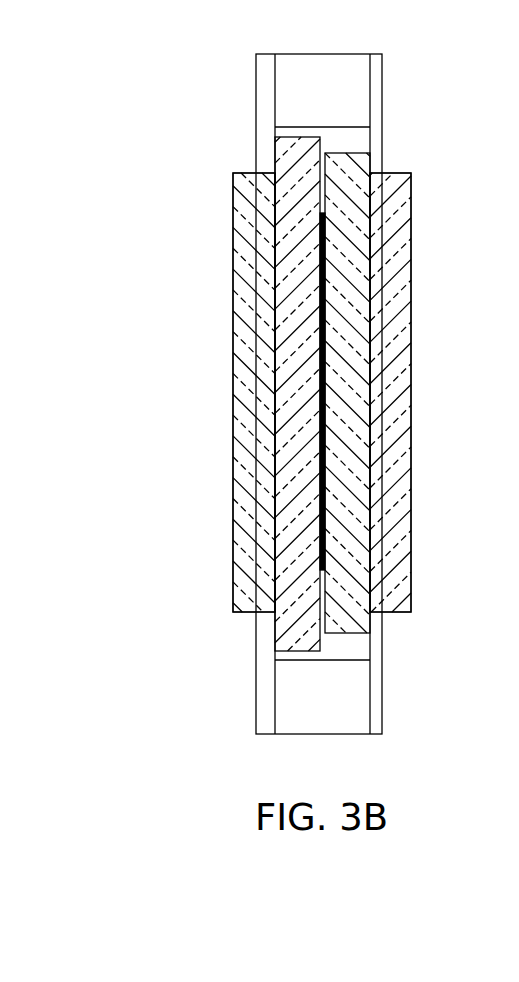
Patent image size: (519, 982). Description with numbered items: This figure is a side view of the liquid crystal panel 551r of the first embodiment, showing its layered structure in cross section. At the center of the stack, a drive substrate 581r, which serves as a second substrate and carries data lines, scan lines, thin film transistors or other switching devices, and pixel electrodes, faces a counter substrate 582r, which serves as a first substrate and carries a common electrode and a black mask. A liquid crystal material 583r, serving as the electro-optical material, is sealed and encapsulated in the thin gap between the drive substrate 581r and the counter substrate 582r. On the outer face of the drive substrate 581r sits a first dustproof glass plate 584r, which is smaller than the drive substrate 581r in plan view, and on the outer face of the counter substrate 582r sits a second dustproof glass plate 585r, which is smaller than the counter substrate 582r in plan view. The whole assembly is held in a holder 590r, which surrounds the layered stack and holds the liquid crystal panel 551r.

The holder 590r is at (360, 90).
The liquid crystal panel 551r is at (235, 298).
The first dustproof glass plate 584r is at (235, 379).
The second dustproof glass plate 585r is at (406, 380).
The drive substrate 581r is at (285, 465).
The counter substrate 582r is at (360, 465).
The liquid crystal material 583r is at (323, 529).